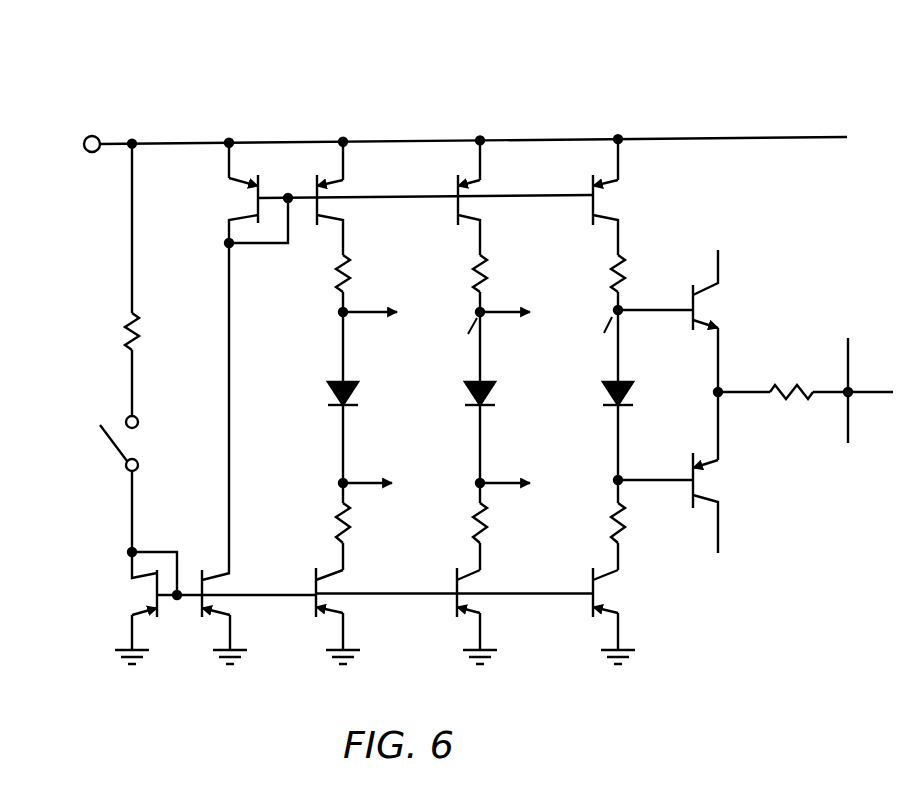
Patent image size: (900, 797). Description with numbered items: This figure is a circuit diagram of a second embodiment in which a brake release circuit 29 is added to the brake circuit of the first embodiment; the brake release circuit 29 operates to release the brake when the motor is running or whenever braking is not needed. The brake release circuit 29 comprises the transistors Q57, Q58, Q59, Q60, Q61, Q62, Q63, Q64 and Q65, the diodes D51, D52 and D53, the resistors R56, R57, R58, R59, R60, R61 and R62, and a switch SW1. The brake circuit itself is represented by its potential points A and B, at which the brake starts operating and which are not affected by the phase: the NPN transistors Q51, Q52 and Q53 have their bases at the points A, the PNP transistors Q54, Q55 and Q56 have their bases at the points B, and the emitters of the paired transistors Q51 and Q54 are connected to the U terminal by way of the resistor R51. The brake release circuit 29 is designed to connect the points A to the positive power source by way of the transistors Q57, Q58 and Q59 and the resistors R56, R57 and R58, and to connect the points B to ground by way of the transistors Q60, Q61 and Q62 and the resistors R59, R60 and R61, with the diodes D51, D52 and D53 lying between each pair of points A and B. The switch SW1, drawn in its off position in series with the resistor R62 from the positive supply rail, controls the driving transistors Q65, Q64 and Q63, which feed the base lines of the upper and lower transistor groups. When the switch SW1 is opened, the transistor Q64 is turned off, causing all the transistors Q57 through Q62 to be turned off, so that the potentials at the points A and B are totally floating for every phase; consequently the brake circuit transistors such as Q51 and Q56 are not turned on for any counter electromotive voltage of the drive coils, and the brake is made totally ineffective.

The brake release circuit 29 is at (662, 117).
The resistor R62 is at (164, 280).
The switch SW1 is at (112, 402).
The transistor Q65 is at (136, 608).
The transistor Q64 is at (259, 617).
The transistor Q63 is at (376, 358).
The transistor Q59 is at (363, 198).
The transistor Q58 is at (501, 197).
The transistor Q57 is at (637, 197).
The resistor R58 is at (308, 318).
The resistor R57 is at (447, 318).
The resistor R56 is at (586, 318).
The NPN transistor Q53 is at (384, 313).
The NPN transistor Q52 is at (518, 325).
The diode D53 is at (375, 441).
The diode D52 is at (513, 441).
The diode D51 is at (644, 410).
The PNP transistor Q56 is at (468, 448).
The PNP transistor Q55 is at (606, 452).
The resistor R61 is at (314, 536).
The resistor R60 is at (443, 536).
The resistor R59 is at (582, 536).
The transistor Q62 is at (386, 616).
The transistor Q61 is at (525, 616).
The transistor Q60 is at (637, 616).
The NPN transistor Q51 is at (694, 321).
The PNP transistor Q54 is at (693, 472).
The resistor R51 is at (803, 390).